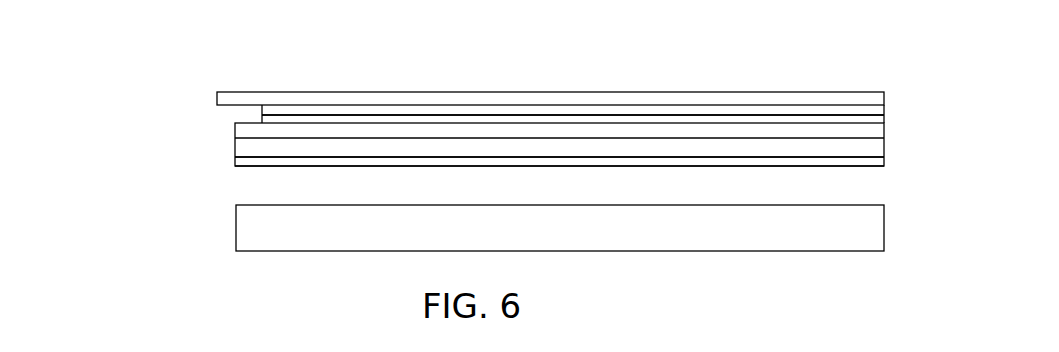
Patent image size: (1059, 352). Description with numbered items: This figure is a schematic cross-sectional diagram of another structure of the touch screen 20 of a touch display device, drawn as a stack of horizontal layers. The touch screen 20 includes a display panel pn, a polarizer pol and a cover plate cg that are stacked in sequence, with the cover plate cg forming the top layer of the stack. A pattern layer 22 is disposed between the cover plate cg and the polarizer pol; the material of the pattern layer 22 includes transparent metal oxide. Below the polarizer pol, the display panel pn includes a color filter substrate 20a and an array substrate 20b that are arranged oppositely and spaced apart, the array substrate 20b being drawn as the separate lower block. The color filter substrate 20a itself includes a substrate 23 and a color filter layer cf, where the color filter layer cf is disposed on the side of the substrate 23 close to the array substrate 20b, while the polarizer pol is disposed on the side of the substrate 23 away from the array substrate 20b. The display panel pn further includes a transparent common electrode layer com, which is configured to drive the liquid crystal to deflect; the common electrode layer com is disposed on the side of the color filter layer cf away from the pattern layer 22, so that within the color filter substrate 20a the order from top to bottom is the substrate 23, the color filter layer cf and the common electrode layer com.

The touch screen 20 is at (872, 50).
The cover plate cg is at (578, 103).
The pattern layer 22 is at (465, 108).
The polarizer pol is at (333, 115).
The display panel pn is at (88, 148).
The color filter substrate 20a is at (158, 111).
The substrate 23 is at (243, 128).
The color filter layer cf is at (248, 146).
The common electrode layer com is at (247, 162).
The array substrate 20b is at (262, 225).